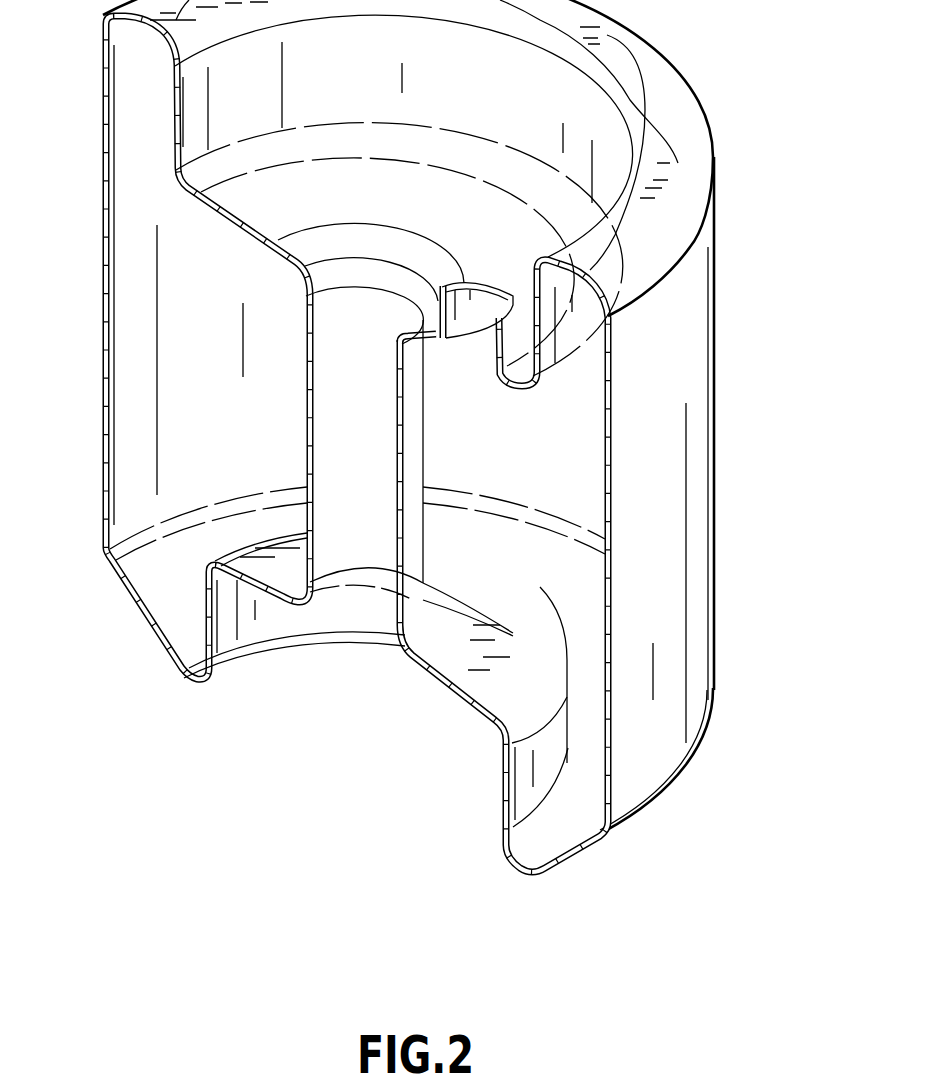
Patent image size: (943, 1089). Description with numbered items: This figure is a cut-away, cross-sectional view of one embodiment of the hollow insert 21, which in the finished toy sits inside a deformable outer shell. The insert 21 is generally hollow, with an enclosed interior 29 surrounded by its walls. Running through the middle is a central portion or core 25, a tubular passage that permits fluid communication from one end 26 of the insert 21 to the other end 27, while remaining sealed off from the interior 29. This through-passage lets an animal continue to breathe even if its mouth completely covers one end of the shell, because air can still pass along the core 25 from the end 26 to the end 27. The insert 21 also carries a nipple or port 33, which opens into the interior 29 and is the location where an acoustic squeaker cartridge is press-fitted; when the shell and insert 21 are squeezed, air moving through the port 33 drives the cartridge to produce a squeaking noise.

The hollow insert 21 is at (692, 330).
The central portion or core 25 is at (309, 452).
The end of the insert 26 is at (677, 100).
The other end of the insert 27 is at (193, 684).
The interior of the hollow insert 29 is at (208, 283).
The nipple or port 33 is at (483, 297).